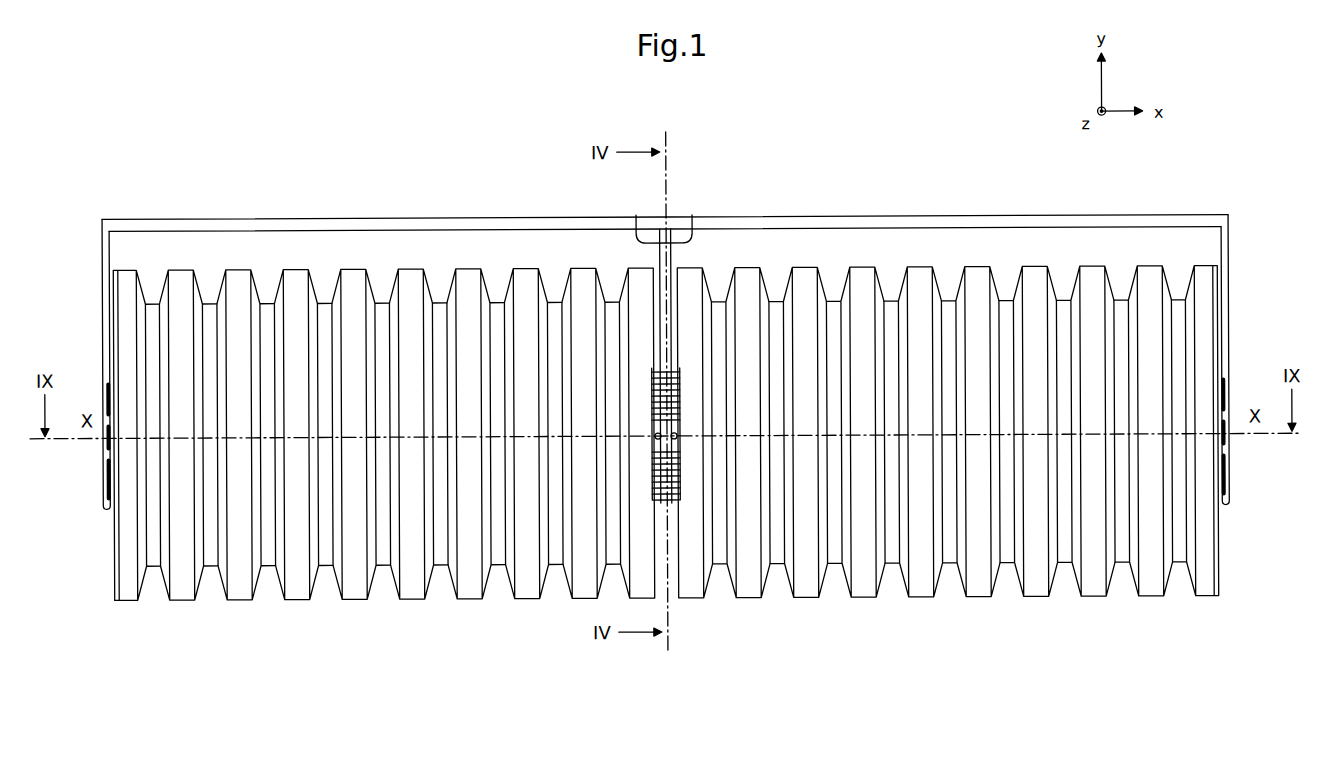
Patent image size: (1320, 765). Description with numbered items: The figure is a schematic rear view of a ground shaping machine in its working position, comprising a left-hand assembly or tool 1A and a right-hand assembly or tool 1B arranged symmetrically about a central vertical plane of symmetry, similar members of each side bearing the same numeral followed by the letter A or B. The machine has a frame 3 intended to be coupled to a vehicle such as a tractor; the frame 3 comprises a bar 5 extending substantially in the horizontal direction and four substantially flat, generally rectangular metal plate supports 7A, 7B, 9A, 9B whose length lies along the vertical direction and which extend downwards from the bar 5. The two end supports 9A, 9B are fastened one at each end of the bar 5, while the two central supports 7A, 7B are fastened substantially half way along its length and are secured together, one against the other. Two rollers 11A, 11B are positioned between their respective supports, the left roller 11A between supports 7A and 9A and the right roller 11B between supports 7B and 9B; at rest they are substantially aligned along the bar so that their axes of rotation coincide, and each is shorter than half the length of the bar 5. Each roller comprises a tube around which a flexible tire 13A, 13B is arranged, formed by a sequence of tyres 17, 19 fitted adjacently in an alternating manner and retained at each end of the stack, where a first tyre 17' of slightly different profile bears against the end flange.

The left-hand assembly or tool 1A is at (464, 386).
The right-hand assembly or tool 1B is at (925, 374).
The frame 3 is at (453, 217).
The bar 5 is at (1201, 216).
The support 7A is at (644, 217).
The support 7B is at (692, 220).
The end support 9A is at (101, 243).
The end support 9B is at (1232, 242).
The roller 11A is at (410, 588).
The roller 11B is at (1085, 589).
The flexible tire 13A is at (181, 594).
The flexible tire 13B is at (1039, 268).
The tyre 17 is at (483, 414).
The first tyre of the stack 17' is at (662, 432).
The tyre 19 is at (268, 303).